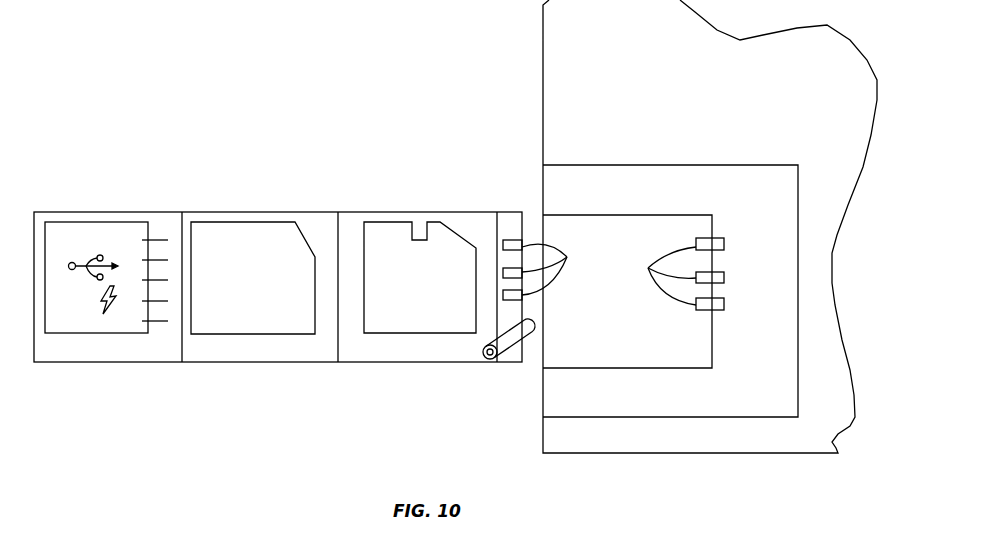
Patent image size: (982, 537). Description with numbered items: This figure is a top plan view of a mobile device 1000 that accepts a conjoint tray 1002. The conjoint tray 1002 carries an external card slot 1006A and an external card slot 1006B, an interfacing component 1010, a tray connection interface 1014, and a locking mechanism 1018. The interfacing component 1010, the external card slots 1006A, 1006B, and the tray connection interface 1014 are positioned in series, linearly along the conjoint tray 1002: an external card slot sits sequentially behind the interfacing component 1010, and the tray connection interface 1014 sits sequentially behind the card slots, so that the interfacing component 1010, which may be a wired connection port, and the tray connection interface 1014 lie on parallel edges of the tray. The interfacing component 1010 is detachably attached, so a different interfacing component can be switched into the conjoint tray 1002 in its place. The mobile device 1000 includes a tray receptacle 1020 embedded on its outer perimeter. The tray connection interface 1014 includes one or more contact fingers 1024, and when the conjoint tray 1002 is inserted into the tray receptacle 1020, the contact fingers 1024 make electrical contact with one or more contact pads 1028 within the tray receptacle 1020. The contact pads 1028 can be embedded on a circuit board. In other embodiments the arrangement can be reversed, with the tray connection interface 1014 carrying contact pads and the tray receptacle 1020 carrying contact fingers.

The mobile device 1000 is at (588, 58).
The conjoint tray 1002 is at (525, 195).
The external card slot 1006A is at (423, 217).
The external card slot 1006B is at (275, 347).
The interfacing component 1010 is at (102, 340).
The tray connection interface 1014 is at (513, 220).
The locking mechanism 1018 is at (505, 343).
The tray receptacle 1020 is at (613, 400).
The contact fingers 1024 is at (562, 261).
The contact pads 1028 is at (664, 274).